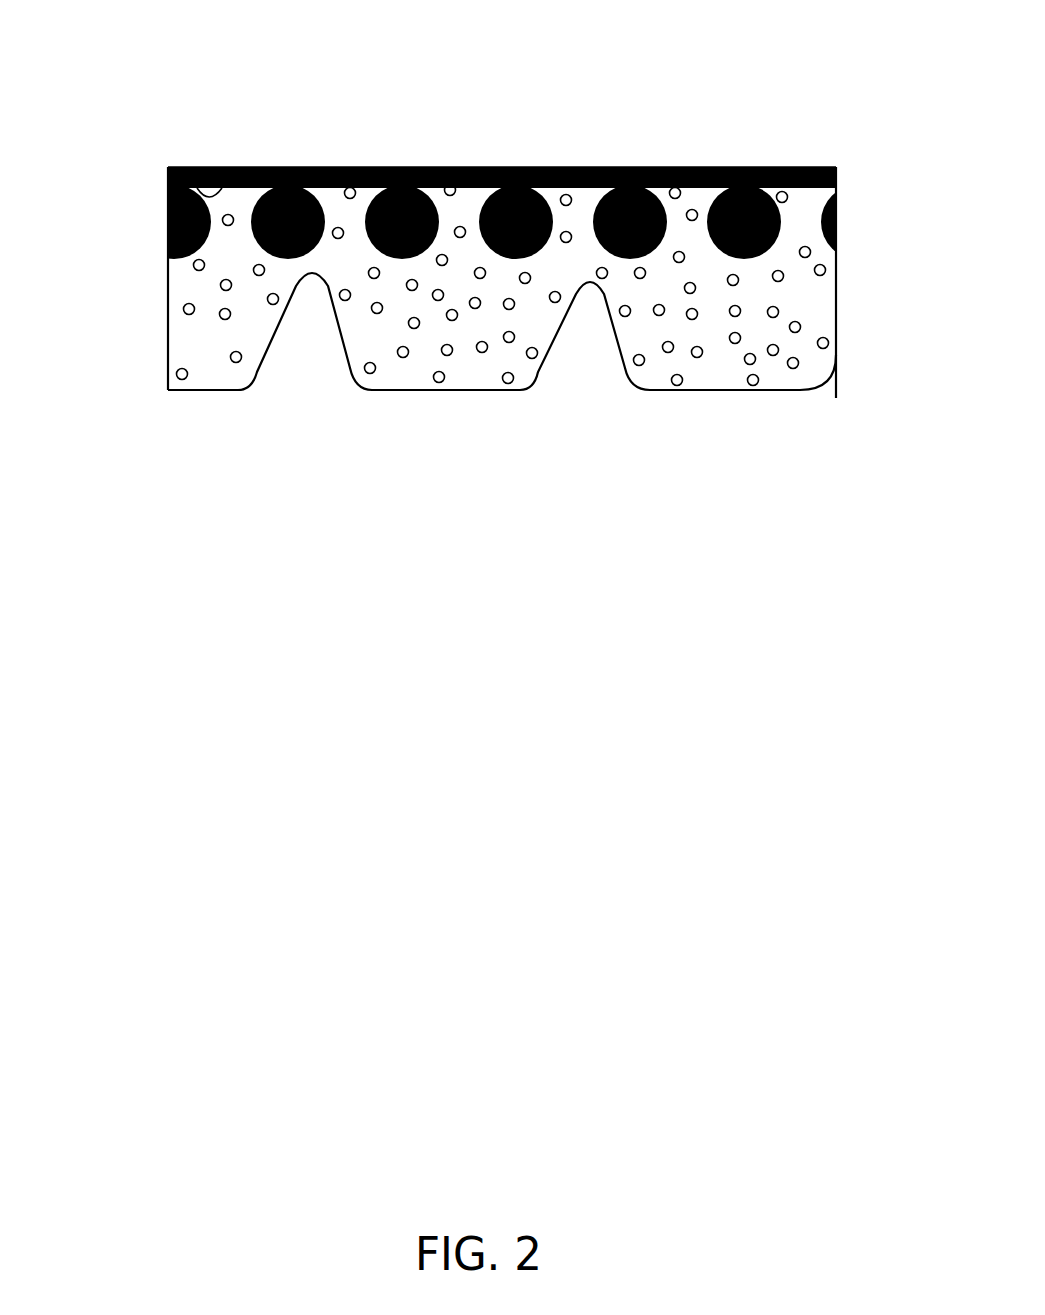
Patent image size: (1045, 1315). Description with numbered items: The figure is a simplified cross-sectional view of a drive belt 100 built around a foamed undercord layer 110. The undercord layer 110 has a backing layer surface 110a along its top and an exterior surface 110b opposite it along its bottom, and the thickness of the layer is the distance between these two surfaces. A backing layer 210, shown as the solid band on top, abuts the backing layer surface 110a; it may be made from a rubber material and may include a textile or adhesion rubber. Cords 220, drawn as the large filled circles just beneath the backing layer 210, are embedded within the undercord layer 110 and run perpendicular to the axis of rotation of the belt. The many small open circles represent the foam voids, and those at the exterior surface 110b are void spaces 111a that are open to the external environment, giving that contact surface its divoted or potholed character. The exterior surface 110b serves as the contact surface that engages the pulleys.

The drive belt 100 is at (139, 44).
The foamed undercord layer 110 is at (433, 338).
The backing layer surface 110a is at (185, 167).
The exterior surface 110b is at (478, 392).
The void spaces 111a is at (231, 353).
The backing layer 210 is at (836, 169).
The cords 220 is at (777, 212).